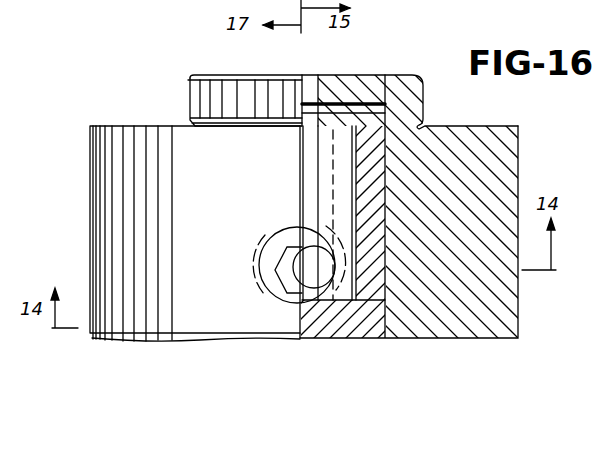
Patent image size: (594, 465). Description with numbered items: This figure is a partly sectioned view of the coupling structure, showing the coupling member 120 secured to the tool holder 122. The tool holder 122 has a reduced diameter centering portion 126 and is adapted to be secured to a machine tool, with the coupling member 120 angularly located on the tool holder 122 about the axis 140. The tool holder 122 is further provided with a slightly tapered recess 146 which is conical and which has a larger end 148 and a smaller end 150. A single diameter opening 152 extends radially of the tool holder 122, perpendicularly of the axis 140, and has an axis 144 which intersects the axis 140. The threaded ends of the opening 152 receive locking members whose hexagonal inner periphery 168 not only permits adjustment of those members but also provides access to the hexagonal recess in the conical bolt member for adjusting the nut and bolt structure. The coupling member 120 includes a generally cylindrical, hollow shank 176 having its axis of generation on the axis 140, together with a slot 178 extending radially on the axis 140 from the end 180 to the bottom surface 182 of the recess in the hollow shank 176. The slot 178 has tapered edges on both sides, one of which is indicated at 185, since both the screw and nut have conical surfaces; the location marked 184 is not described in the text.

The coupling member 120 is at (520, 337).
The tool holder 122 is at (90, 202).
The reduced diameter centering portion 126 is at (428, 100).
The axis 140 is at (318, 180).
The axis 144 is at (262, 288).
The slightly tapered recess 146 is at (383, 217).
The larger end 148 is at (388, 153).
The smaller end 150 is at (388, 292).
The single diameter opening 152 is at (258, 258).
The hexagonal inner periphery 168 is at (300, 216).
The hollow shank 176 is at (388, 186).
The slot 178 is at (318, 146).
The end 180 is at (366, 100).
The bottom surface 182 is at (297, 232).
The slot 184 is at (320, 185).
The tapered edge 185 is at (320, 145).